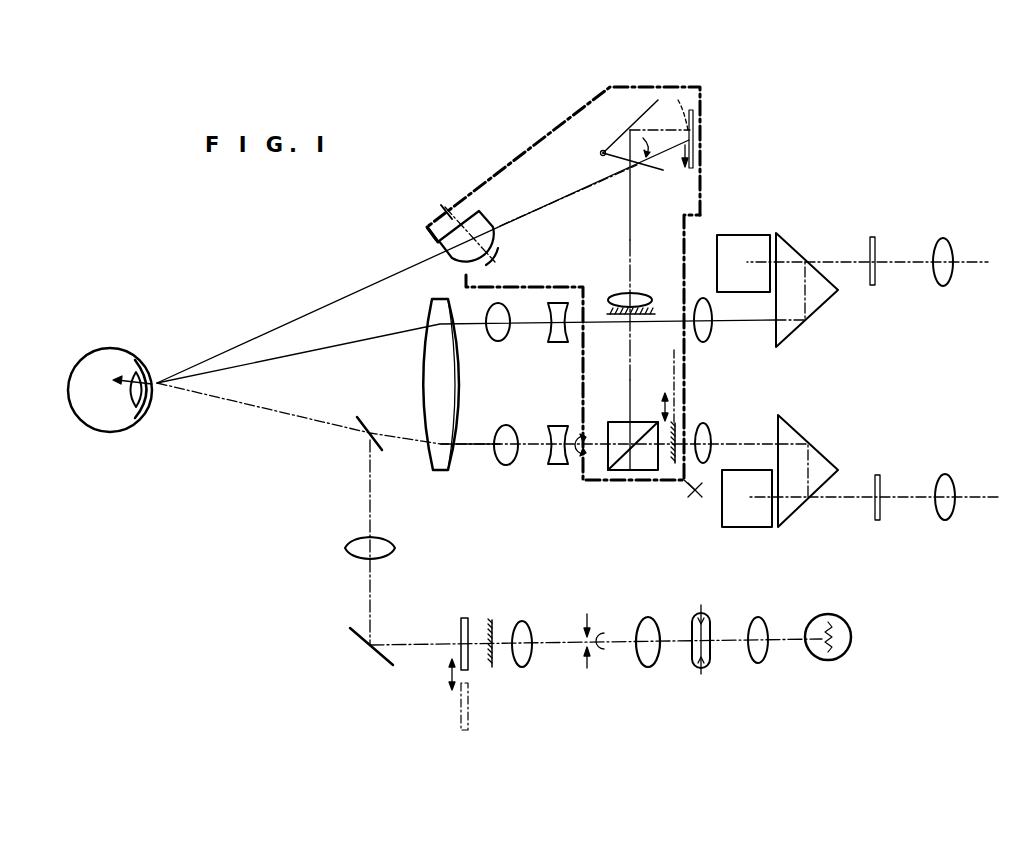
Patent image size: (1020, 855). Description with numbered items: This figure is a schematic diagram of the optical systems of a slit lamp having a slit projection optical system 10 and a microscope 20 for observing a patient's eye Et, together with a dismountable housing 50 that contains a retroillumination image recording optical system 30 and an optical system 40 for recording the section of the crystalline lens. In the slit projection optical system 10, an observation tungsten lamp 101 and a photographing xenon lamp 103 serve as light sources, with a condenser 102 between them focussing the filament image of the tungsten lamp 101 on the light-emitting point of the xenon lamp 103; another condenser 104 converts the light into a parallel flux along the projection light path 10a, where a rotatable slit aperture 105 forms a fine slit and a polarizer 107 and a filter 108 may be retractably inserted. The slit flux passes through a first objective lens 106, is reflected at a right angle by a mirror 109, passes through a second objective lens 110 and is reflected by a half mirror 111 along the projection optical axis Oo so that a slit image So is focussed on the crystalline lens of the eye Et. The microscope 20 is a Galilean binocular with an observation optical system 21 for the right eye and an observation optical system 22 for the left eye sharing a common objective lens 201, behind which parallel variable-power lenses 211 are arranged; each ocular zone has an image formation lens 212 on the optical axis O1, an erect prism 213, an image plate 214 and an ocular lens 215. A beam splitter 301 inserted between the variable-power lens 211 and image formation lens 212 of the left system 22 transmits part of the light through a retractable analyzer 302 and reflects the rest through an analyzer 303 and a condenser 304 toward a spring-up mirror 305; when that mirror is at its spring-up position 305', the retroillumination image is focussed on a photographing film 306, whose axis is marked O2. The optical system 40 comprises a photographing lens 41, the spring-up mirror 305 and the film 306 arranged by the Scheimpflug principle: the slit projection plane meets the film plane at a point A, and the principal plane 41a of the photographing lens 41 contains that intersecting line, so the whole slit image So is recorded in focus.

The slit projection optical system 10 is at (660, 690).
The projection light path 10a is at (417, 642).
The observation tungsten lamp 101 is at (840, 655).
The condenser 102 is at (765, 617).
The photographing xenon lamp 103 is at (712, 662).
The condenser 104 is at (652, 617).
The slit aperture 105 is at (590, 614).
The first objective lens 106 is at (525, 668).
The polarizer 107 is at (494, 618).
The filter 108 is at (464, 617).
The mirror 109 is at (392, 668).
The second objective lens 110 is at (395, 548).
The half mirror 111 is at (363, 421).
The microscope 20 is at (905, 381).
The objective lens 201 is at (450, 390).
The observation optical system for the right eye 21 is at (832, 320).
The variable-power lens 211 is at (557, 455).
The image formation lens 212 is at (706, 424).
The erect prism 213 is at (760, 527).
The image plate 214 is at (880, 520).
The ocular lens 215 is at (950, 518).
The observation optical system for the left eye 22 is at (857, 448).
The retroillumination image recording optical system 30 is at (611, 416).
The beam splitter 301 is at (637, 465).
The analyzer 302 is at (676, 485).
The analyzer 303 is at (616, 317).
The condenser 304 is at (621, 291).
The spring-up mirror 305 is at (639, 178).
The spring-up position 305' is at (637, 100).
The photographing film 306 is at (697, 135).
The optical system for recording the section of the crystalline lens 40 is at (408, 235).
The photographing lens 41 is at (497, 213).
The principal plane 41a is at (500, 262).
The housing 50 is at (567, 115).
The patient's eye Et is at (135, 357).
The slit image So is at (148, 400).
The projection optical axis Oo is at (228, 408).
The optical axis O1 is at (470, 448).
The optical axis O2 is at (700, 92).
The point A is at (697, 488).